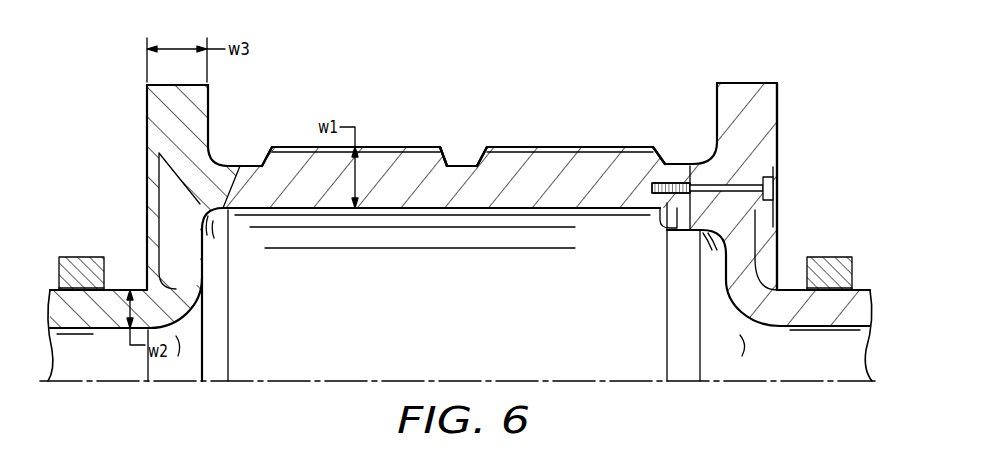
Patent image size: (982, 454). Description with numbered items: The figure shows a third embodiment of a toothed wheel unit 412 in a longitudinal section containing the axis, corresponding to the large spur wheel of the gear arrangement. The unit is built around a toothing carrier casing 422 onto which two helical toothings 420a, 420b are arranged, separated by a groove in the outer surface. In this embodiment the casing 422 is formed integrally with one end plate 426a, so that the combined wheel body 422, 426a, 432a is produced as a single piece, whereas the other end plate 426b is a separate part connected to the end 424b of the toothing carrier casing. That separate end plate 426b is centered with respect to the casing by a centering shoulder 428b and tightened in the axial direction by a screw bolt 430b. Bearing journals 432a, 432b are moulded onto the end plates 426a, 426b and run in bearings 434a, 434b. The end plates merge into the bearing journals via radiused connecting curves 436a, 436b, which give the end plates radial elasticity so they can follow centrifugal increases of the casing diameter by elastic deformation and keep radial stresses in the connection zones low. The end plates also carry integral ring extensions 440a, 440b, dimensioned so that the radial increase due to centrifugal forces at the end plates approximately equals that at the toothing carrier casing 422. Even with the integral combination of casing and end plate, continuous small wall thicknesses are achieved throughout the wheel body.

The toothed wheel unit 412 is at (338, 79).
The helical toothing 420a is at (407, 144).
The helical toothing 420b is at (575, 147).
The toothing carrier casing 422 is at (455, 168).
The end of the toothing carrier casing 424b is at (665, 203).
The end plate 426a is at (155, 118).
The end plate 426b is at (770, 120).
The centering shoulder 428b is at (667, 248).
The screw bolt 430b is at (750, 181).
The bearing journal 432a is at (118, 344).
The bearing journal 432b is at (853, 342).
The bearing 434a is at (80, 256).
The bearing 434b is at (835, 258).
The radiused connecting curve 436a is at (198, 308).
The radiused connecting curve 436b is at (750, 307).
The integral ring extension 440a is at (160, 90).
The integral ring extension 440b is at (740, 90).